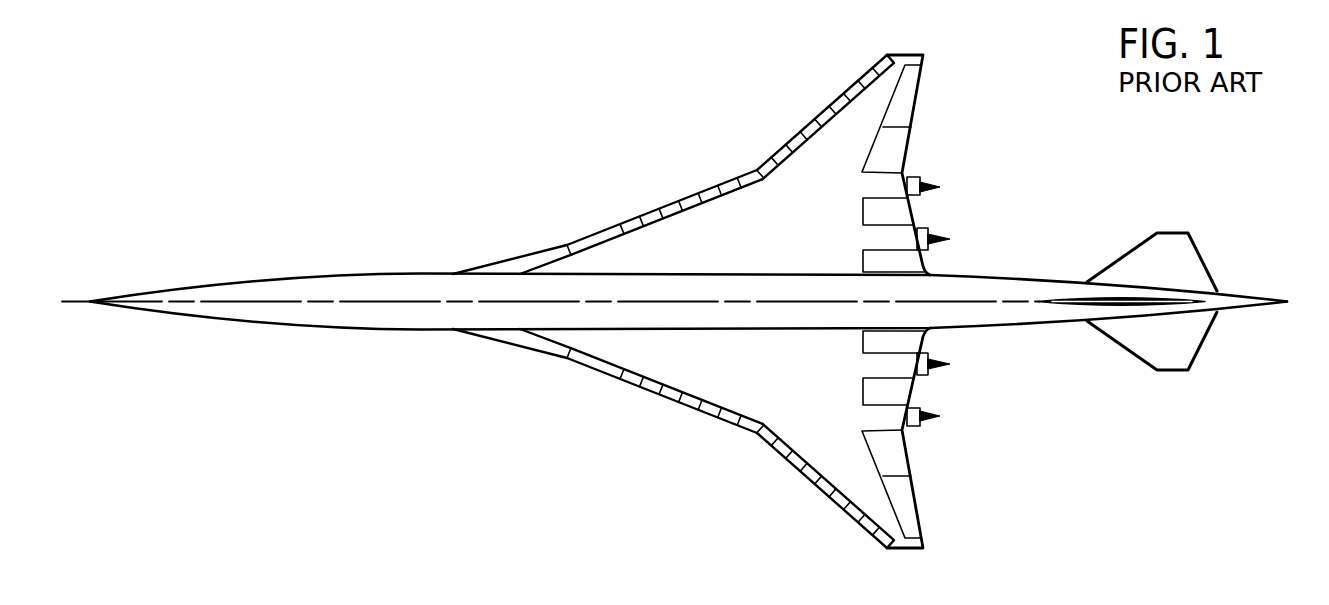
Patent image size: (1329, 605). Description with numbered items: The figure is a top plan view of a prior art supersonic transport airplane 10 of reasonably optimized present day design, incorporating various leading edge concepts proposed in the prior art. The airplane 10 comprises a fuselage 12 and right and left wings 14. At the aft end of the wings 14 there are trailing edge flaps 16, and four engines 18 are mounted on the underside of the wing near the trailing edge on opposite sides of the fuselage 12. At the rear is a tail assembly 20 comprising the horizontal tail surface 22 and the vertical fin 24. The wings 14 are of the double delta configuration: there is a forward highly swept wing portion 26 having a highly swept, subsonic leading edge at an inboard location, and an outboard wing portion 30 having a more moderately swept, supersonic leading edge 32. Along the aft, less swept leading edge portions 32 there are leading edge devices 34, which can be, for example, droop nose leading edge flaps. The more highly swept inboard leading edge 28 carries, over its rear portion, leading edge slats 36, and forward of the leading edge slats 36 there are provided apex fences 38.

The airplane 10 is at (377, 196).
The fuselage 12 is at (350, 285).
The wings 14 is at (857, 125).
The trailing edge flaps 16 is at (900, 143).
The engines 18 is at (927, 228).
The tail assembly 20 is at (1213, 232).
The horizontal tail surface 22 is at (1197, 267).
The vertical fin 24 is at (1170, 302).
The forward highly swept wing portion 26 is at (647, 247).
The inboard leading edge 28 is at (592, 237).
The outboard wing portion 30 is at (797, 207).
The leading edge 32 is at (773, 152).
The leading edge devices 34 is at (800, 128).
The leading edge slats 36 is at (680, 200).
The apex fences 38 is at (573, 247).